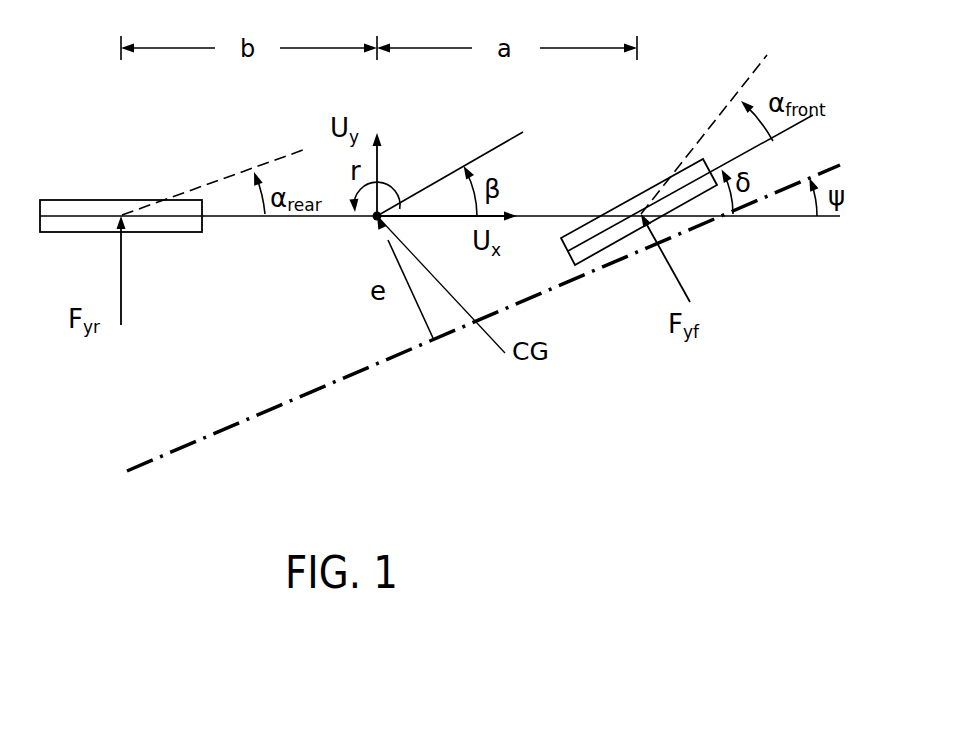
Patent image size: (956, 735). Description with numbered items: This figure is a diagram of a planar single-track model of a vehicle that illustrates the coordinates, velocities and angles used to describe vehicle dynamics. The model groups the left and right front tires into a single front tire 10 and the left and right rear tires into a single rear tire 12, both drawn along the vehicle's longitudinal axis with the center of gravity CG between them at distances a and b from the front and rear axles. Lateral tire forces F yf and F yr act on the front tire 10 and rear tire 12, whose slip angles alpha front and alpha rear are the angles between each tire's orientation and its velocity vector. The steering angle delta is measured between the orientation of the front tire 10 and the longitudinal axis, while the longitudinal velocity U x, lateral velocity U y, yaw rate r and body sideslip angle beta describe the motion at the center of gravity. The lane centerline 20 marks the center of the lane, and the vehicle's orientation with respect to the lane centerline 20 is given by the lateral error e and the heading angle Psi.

The front tire 10 is at (583, 250).
The rear tire 12 is at (183, 228).
The lane centerline 20 is at (370, 368).